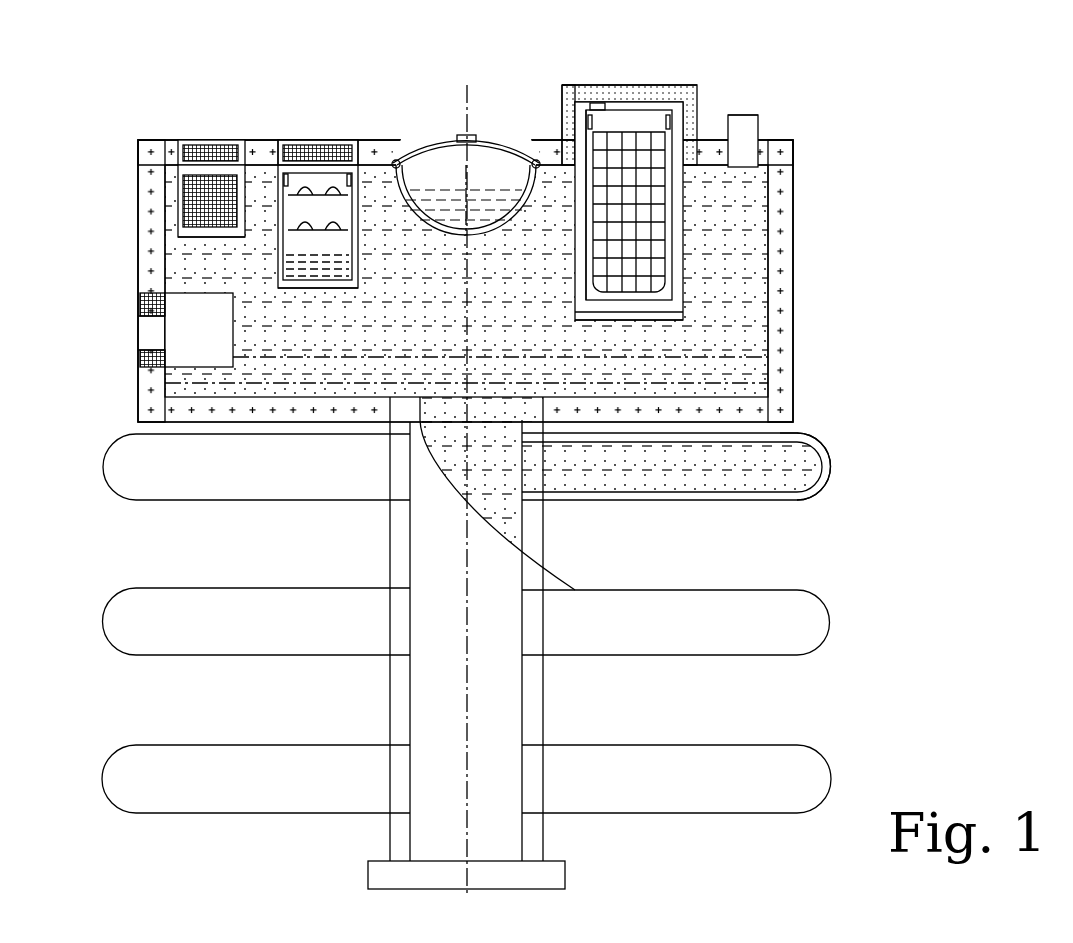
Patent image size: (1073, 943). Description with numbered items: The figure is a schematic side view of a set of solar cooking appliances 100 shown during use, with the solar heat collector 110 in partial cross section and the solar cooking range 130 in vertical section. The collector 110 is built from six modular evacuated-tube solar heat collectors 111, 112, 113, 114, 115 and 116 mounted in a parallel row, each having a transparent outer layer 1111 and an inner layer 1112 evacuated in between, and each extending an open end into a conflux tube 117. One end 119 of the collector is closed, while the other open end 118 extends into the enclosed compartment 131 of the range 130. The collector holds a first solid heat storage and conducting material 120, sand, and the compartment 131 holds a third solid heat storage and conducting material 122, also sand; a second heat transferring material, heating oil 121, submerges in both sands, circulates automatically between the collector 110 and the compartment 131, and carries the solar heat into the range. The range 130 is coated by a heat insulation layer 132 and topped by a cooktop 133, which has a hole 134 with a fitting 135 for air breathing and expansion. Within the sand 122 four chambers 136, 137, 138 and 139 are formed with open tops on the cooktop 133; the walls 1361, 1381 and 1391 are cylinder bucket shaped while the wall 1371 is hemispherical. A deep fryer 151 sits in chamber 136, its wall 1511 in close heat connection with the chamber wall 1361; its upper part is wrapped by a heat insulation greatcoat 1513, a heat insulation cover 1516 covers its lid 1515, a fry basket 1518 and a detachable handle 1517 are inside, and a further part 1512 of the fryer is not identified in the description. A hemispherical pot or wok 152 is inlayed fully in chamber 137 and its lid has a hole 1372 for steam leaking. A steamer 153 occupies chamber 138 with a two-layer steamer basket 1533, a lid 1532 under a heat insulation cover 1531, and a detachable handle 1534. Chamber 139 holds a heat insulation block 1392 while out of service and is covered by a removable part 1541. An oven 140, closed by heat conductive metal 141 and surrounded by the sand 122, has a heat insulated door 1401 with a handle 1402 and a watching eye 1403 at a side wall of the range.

The solar cooking appliances 100 is at (544, 271).
The solar heat collector 110 is at (695, 489).
The modular evacuated-tube solar heat collector 111 is at (715, 453).
The transparent outer layer 1111 is at (853, 466).
The inner layer 1112 is at (824, 410).
The modular evacuated-tube solar heat collector 112 is at (676, 599).
The modular evacuated-tube solar heat collector 113 is at (676, 757).
The modular evacuated-tube solar heat collector 114 is at (256, 757).
The modular evacuated-tube solar heat collector 115 is at (257, 599).
The modular evacuated-tube solar heat collector 116 is at (256, 488).
The conflux tube 117 is at (557, 629).
The open end 118 is at (505, 493).
The closed end 119 is at (514, 861).
The first solid heat storage and conducting material 120 is at (672, 491).
The second heat conducting/transferring material 121 is at (701, 491).
The third solid heat storage and conducting material 122 is at (510, 259).
The solar cooking range 130 is at (504, 269).
The enclosed compartment 131 is at (536, 281).
The heat insulation layer 132 is at (815, 281).
The cooktop 133 is at (455, 123).
The hole 134 is at (764, 136).
The fitting 135 is at (756, 97).
The chamber 136 is at (593, 217).
The chamber wall 1361 is at (614, 337).
The chamber 137 is at (457, 175).
The chamber wall 1371 is at (481, 221).
The hole 1372 is at (466, 139).
The chamber 138 is at (344, 214).
The chamber wall 1381 is at (355, 290).
The chamber 139 is at (231, 201).
The chamber wall 1391 is at (191, 255).
The heat insulation block 1392 is at (214, 224).
The oven 140 is at (225, 330).
The heat insulated door 1401 is at (115, 354).
The handle 1402 is at (113, 314).
The watching eye 1403 is at (115, 363).
The heat conductive metal 141 is at (190, 281).
The deep fryer 151 is at (670, 114).
The wall 1511 is at (539, 206).
The frame corner 1512 is at (541, 75).
The heat insulation greatcoat 1513 is at (536, 117).
The lid 1515 is at (572, 74).
The heat insulation cover 1516 is at (629, 56).
The detachable handle 1517 is at (658, 171).
The fry basket 1518 is at (662, 248).
The pot or wok 152 is at (472, 132).
The steamer 153 is at (310, 309).
The heat insulation cover 1531 is at (315, 130).
The lid 1532 is at (291, 136).
The steamer basket 1533 is at (343, 226).
The detachable handle 1534 is at (320, 133).
The removable part 1541 is at (225, 124).